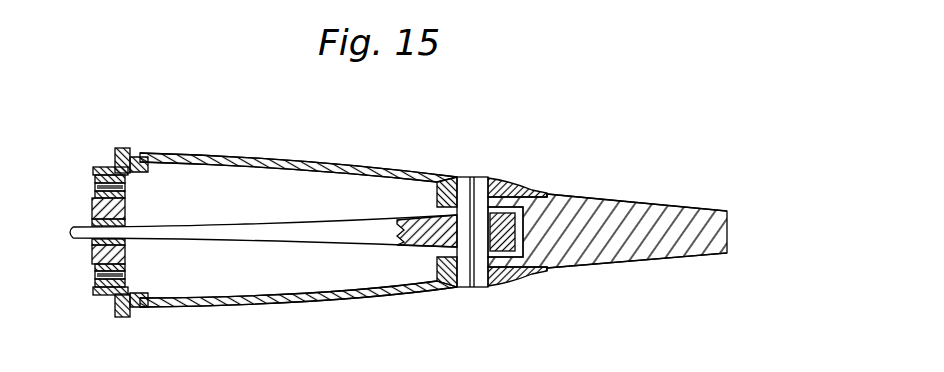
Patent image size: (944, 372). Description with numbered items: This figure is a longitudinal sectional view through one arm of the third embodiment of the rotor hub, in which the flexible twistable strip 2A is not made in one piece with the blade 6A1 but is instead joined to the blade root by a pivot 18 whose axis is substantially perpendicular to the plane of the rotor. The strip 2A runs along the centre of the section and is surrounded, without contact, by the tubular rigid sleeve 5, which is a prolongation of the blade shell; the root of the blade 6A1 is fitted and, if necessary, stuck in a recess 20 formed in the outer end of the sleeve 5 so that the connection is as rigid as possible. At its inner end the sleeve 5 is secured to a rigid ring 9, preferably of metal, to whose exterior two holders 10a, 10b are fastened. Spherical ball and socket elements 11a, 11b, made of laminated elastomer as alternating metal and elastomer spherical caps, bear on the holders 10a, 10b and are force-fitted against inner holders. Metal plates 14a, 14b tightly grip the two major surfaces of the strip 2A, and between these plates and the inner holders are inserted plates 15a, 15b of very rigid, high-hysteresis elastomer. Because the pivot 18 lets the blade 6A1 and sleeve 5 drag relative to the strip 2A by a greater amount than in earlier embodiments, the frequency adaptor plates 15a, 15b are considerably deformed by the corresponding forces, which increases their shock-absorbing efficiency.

The flexible twistable strip 2A is at (263, 225).
The tubular rigid sleeve 5 is at (327, 161).
The blade 6A1 is at (620, 238).
The rigid ring 9 is at (130, 155).
The outer holder 10a is at (105, 296).
The outer holder 10b is at (102, 167).
The spherical ball and socket element 11a is at (93, 280).
The spherical ball and socket element 11b is at (93, 184).
The metal plate 14a is at (127, 243).
The metal plate 14b is at (127, 222).
The frequency adaptor plate 15a is at (92, 252).
The frequency adaptor plate 15b is at (91, 211).
The pivot 18 is at (476, 177).
The recess 20 is at (512, 182).